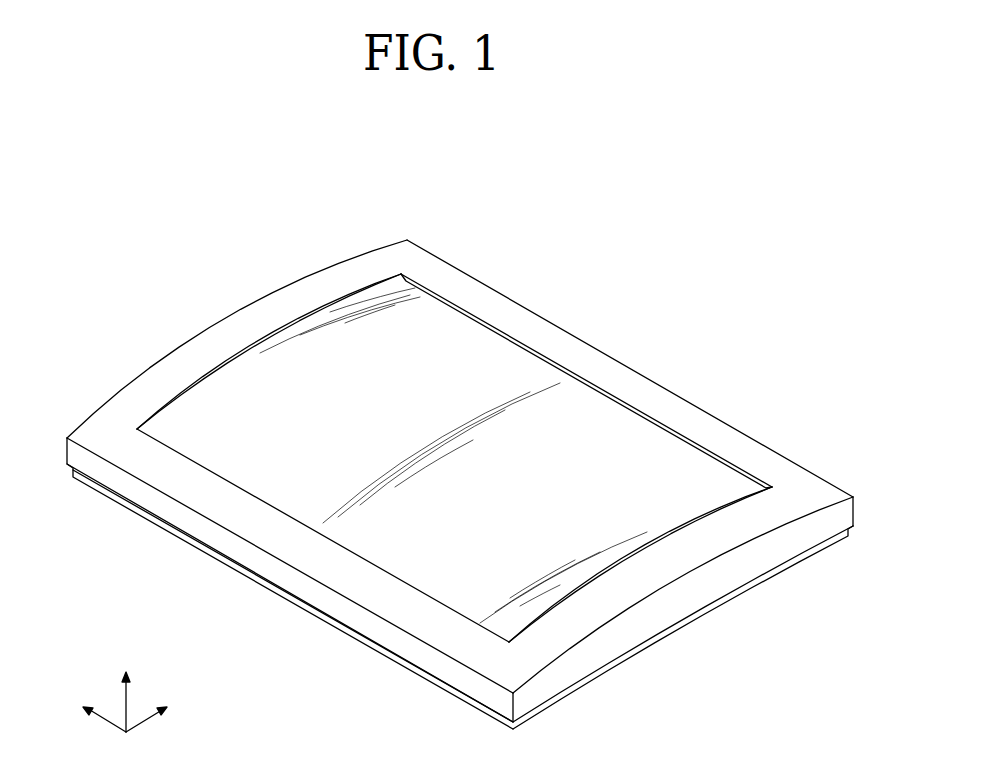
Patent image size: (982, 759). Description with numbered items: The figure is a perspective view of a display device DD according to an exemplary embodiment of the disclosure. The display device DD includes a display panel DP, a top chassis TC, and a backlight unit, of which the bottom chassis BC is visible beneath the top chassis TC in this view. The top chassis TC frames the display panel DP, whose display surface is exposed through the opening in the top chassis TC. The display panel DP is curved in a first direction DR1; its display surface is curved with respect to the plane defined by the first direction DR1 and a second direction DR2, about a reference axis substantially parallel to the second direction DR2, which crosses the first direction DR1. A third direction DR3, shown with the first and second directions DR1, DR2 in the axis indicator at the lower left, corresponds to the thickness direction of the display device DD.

The display device DD is at (658, 262).
The top chassis TC is at (528, 328).
The display panel DP is at (642, 450).
The bottom chassis BC is at (703, 613).
The first direction DR1 is at (170, 712).
The second direction DR2 is at (83, 712).
The third direction DR3 is at (127, 689).